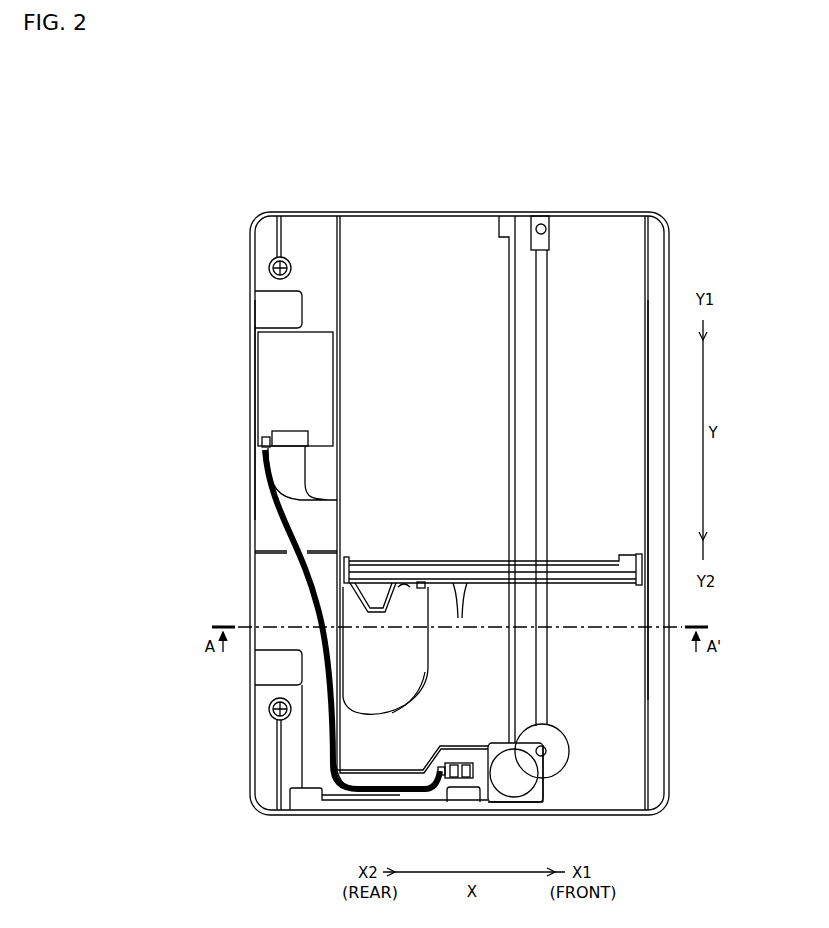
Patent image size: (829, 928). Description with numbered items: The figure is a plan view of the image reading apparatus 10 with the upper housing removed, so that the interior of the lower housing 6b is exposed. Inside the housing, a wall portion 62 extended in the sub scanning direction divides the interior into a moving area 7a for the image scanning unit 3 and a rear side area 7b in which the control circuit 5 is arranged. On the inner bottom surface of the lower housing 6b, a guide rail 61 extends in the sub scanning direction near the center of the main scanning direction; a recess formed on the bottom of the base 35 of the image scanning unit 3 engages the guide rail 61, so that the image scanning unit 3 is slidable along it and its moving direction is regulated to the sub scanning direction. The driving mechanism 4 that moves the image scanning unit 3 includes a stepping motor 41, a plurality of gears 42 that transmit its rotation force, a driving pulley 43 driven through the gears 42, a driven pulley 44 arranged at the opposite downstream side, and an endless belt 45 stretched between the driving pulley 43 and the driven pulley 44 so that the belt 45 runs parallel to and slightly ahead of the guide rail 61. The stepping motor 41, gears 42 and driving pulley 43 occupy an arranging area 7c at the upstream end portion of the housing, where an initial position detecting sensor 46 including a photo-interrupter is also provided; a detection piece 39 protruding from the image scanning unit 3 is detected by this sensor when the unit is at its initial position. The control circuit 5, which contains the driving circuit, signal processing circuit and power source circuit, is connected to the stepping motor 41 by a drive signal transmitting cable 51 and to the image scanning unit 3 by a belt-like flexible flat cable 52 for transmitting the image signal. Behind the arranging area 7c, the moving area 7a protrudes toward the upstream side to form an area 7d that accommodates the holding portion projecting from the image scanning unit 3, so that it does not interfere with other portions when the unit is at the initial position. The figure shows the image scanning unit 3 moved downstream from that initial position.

The image reading apparatus 10 is at (680, 272).
The control circuit 5 is at (258, 387).
The wall portion 62 is at (340, 390).
The lower housing 6b is at (249, 512).
The moving area 7a is at (640, 475).
The area for arranging the control circuit 7b is at (322, 463).
The arranging area 7c is at (545, 805).
The area for accommodating the holding portion 7d is at (380, 764).
The drive signal transmitting cable 51 is at (350, 793).
The initial position detecting sensor 46 is at (456, 790).
The guide rail 61 is at (508, 362).
The driven pulley 44 is at (552, 229).
The endless belt 45 is at (548, 320).
The gears 42 is at (568, 735).
The driving pulley 43 is at (548, 758).
The stepping motor 41 is at (497, 795).
The driving mechanism 4 is at (552, 790).
The image scanning unit 3 is at (425, 560).
The base 35 is at (607, 586).
The detection piece 39 is at (462, 603).
The flexible flat cable 52 is at (428, 668).